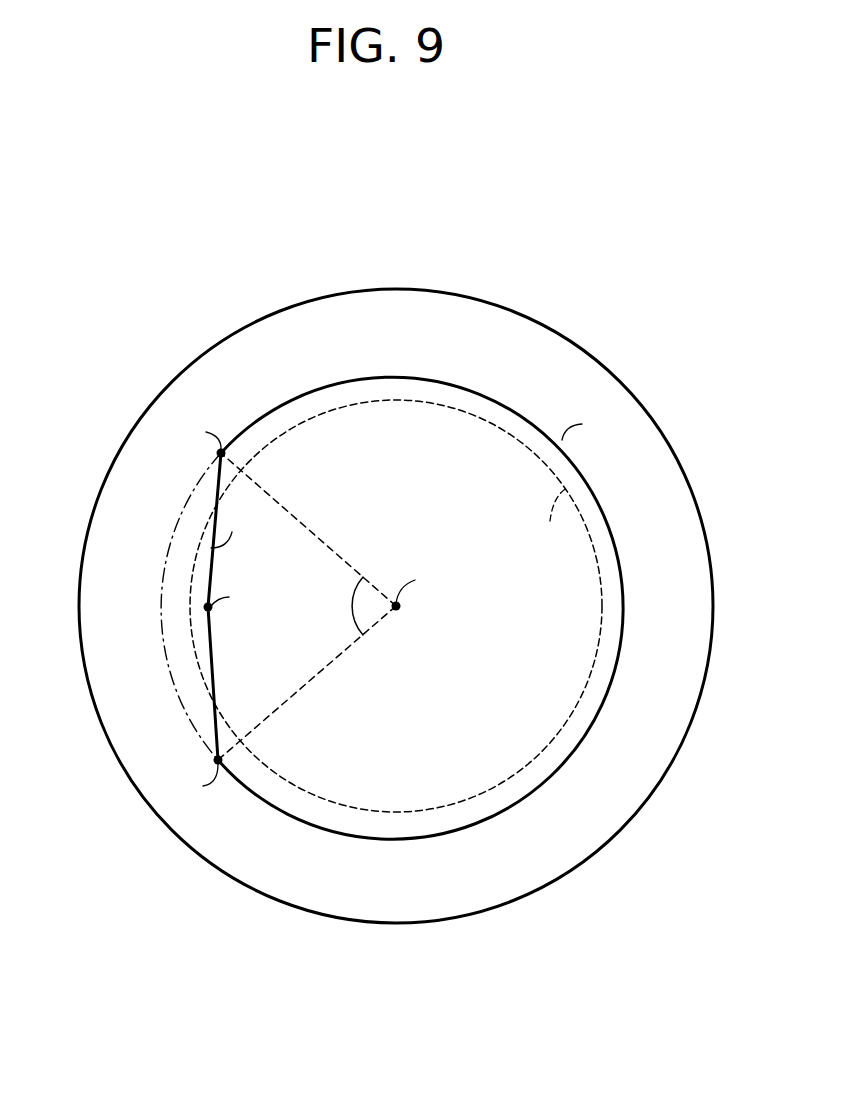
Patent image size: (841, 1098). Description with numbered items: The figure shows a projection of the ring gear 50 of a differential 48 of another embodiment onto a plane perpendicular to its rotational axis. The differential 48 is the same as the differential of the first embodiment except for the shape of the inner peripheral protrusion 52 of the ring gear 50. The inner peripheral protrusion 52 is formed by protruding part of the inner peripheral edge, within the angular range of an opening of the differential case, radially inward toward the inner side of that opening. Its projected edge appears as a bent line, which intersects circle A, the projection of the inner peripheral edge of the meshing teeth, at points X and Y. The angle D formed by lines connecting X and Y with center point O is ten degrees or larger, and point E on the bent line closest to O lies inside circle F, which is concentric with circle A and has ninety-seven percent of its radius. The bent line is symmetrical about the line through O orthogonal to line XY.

The differential 48 is at (646, 207).
The ring gear 50 is at (171, 301).
The inner peripheral protrusion 52 is at (198, 628).